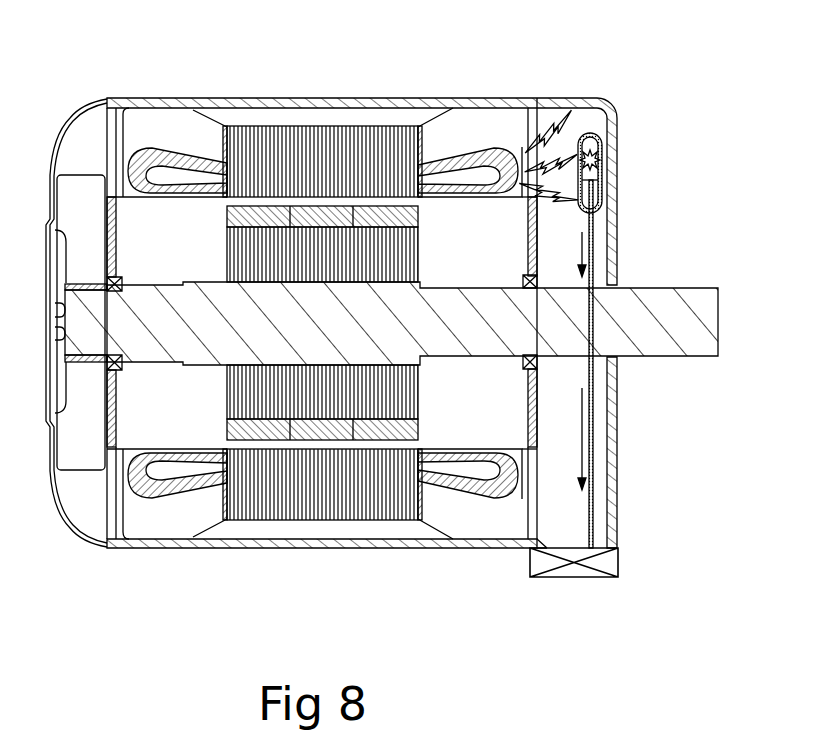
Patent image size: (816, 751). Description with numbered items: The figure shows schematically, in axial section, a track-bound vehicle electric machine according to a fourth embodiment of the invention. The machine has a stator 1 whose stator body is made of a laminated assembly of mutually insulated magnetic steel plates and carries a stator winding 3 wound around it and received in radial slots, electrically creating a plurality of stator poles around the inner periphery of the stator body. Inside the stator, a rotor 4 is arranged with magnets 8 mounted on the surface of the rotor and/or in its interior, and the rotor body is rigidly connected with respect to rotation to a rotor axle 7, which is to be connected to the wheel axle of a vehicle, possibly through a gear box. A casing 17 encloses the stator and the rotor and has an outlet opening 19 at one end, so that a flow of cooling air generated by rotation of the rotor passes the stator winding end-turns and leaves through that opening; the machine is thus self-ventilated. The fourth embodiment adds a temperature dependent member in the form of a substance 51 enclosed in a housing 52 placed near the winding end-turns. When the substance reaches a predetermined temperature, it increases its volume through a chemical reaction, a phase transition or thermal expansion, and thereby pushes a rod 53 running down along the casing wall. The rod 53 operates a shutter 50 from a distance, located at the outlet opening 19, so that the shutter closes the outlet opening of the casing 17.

The casing 17 is at (422, 98).
The stator 1 is at (418, 144).
The stator winding 3 is at (458, 160).
The magnets 8 is at (421, 215).
The rotor 4 is at (421, 256).
The rotor axle 7 is at (683, 304).
The housing 52 is at (603, 140).
The substance 51 is at (603, 175).
The rod 53 is at (597, 253).
The outlet opening 19 is at (545, 541).
The shutter 50 is at (582, 572).